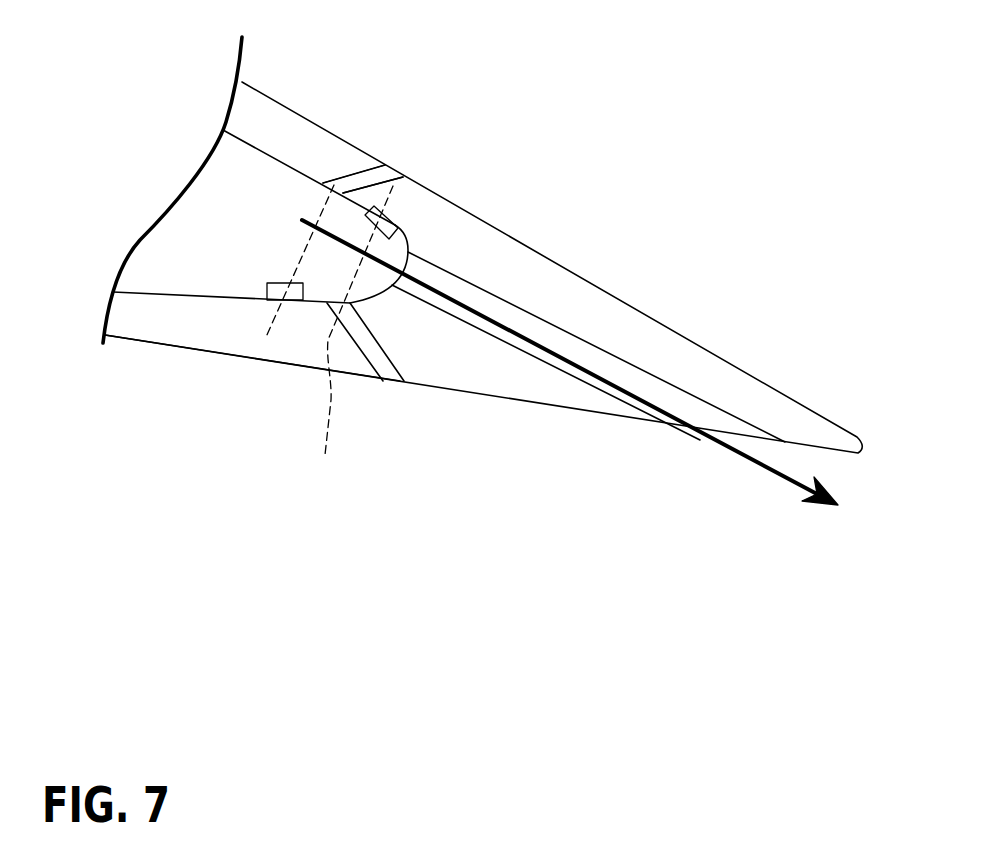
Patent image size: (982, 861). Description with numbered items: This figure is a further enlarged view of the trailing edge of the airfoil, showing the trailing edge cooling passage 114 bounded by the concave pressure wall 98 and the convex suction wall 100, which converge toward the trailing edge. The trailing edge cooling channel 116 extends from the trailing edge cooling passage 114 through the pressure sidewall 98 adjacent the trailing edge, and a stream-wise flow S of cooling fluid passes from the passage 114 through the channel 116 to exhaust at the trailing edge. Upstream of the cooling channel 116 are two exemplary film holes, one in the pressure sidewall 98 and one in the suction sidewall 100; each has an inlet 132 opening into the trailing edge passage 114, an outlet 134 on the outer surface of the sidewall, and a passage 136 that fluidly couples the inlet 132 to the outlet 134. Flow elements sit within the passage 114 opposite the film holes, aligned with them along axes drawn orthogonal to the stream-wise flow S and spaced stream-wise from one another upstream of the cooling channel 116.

The pressure wall 98 is at (200, 351).
The suction wall 100 is at (522, 240).
The trailing edge cooling passage 114 is at (233, 233).
The trailing edge cooling channel 116 is at (637, 365).
The inlet 132 is at (323, 193).
The outlet 134 is at (393, 185).
The passage 136 is at (356, 170).
The stream-wise flow S is at (758, 461).